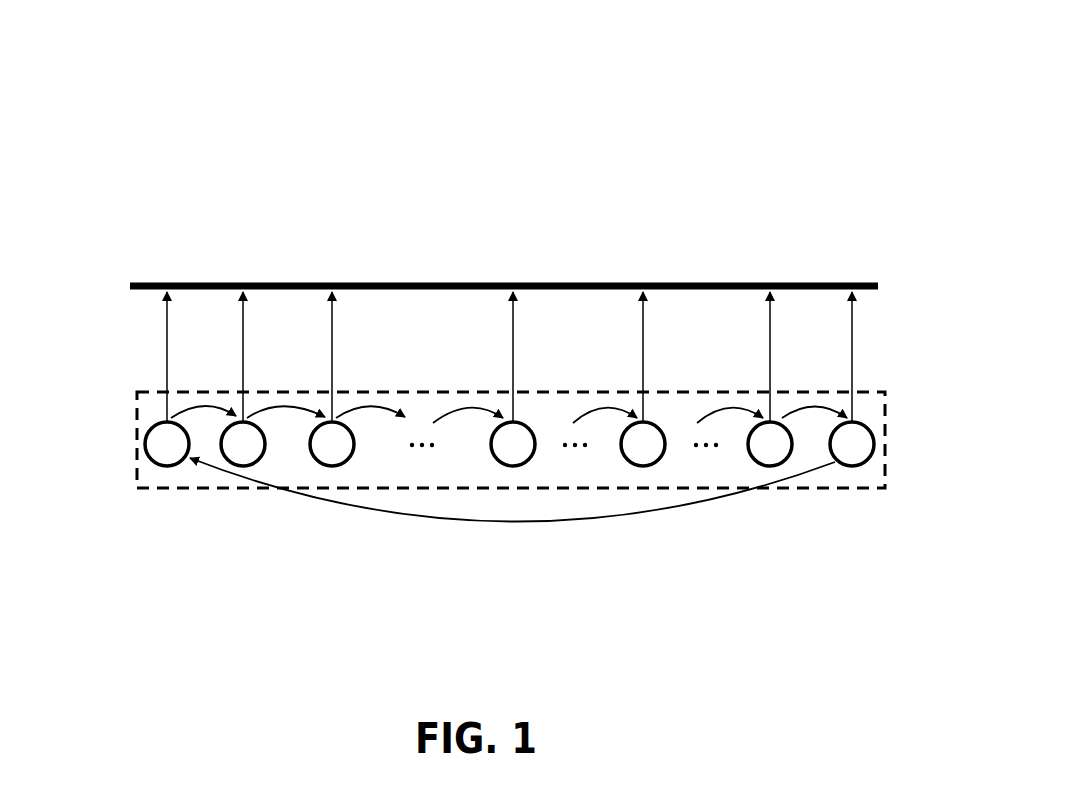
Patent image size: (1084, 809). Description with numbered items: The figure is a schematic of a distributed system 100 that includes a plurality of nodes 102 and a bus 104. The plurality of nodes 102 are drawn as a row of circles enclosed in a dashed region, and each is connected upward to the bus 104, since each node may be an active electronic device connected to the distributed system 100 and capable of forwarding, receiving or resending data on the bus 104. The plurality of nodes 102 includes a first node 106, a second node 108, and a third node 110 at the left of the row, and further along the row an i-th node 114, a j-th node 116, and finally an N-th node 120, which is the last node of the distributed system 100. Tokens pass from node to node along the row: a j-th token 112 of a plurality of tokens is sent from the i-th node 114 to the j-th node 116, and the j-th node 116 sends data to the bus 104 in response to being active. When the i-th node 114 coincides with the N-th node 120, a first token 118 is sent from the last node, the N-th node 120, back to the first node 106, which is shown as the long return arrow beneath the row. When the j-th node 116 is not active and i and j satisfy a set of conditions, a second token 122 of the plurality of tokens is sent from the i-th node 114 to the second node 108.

The distributed system 100 is at (762, 163).
The plurality of nodes 102 is at (136, 480).
The bus 104 is at (433, 282).
The first node 106 is at (167, 466).
The second node 108 is at (246, 466).
The third node 110 is at (341, 465).
The j-th token 112 is at (612, 407).
The i-th node 114 is at (516, 466).
The j-th node 116 is at (648, 466).
The first token 118 is at (755, 498).
The N-th node 120 is at (855, 466).
The second token 122 is at (185, 407).